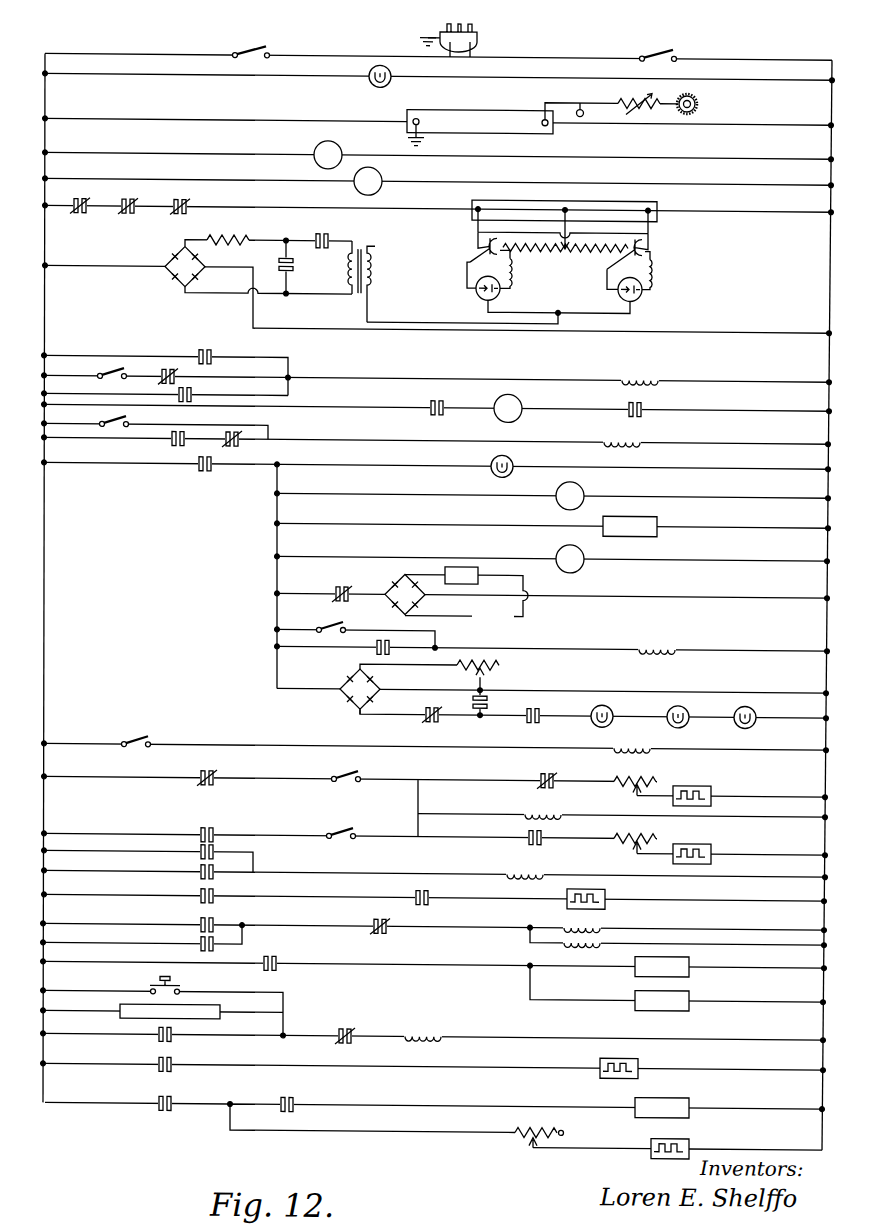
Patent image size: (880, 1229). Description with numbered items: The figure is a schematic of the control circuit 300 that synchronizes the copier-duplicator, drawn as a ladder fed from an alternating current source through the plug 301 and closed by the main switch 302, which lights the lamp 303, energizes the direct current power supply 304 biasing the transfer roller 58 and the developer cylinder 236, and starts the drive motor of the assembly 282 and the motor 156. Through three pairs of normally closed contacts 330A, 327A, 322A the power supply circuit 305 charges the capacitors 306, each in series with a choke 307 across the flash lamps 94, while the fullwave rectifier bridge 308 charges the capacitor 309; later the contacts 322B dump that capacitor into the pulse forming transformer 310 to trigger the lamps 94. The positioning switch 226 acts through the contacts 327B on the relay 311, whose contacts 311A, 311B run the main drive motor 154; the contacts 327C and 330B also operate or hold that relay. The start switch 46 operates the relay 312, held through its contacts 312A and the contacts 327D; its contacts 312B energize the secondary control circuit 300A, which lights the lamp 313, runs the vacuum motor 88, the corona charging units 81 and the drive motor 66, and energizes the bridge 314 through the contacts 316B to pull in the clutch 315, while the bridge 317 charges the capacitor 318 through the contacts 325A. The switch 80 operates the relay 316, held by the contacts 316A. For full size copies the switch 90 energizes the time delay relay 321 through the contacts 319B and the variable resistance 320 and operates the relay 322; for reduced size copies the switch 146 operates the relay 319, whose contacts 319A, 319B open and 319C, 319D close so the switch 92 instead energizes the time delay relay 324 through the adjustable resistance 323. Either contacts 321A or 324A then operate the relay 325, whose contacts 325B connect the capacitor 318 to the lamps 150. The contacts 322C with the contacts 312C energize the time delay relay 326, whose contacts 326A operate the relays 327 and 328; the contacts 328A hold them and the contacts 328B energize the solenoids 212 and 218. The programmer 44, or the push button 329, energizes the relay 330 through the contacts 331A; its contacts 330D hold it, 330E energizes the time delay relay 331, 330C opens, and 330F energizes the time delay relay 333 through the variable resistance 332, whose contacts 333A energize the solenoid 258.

The control circuit 300 is at (81, 39).
The secondary control circuit 300A is at (238, 584).
The plug 301 is at (479, 34).
The main switch 302 is at (234, 47).
The lamp 303 is at (372, 81).
The direct current power supply 304 is at (542, 125).
The cylinder 236 is at (698, 93).
The transfer roller 58 is at (586, 114).
The assembly 282 is at (316, 143).
The motor 156 is at (382, 170).
The normally closed contacts 330A is at (82, 213).
The normally closed contacts 327A is at (142, 213).
The normally closed contacts 322A is at (188, 199).
The normally open contacts 322B is at (330, 222).
The pulse forming transformer 310 is at (374, 240).
The capacitor 309 is at (296, 262).
The fullwave rectifier bridge 308 is at (164, 280).
The power supply circuit 305 is at (656, 200).
The capacitors 306 is at (476, 235).
The choke 307 is at (515, 262).
The lamps 94 is at (476, 284).
The switch 226 is at (104, 365).
The normally closed contacts 327B is at (168, 366).
The normally open contacts 330B is at (207, 346).
The normally open contacts 327C is at (194, 384).
The relay 311 is at (647, 370).
The normally open contacts 311A is at (432, 408).
The main drive motor 154 is at (522, 401).
The normally open contacts 311B is at (640, 410).
The start switch 46 is at (102, 414).
The normally open contacts 312A is at (172, 440).
The normally closed contacts 327D is at (235, 440).
The relay 312 is at (612, 435).
The lamp 313 is at (492, 458).
The normally open contacts 312B is at (204, 470).
The vacuum motor 88 is at (580, 488).
The corona charging units 81 is at (655, 518).
The clutch 315 is at (463, 562).
The normally closed contacts 316B is at (338, 587).
The fullwave rectifier bridge 314 is at (393, 579).
The drive motor 66 is at (580, 564).
The switch 80 is at (320, 618).
The relay 316 is at (662, 640).
The normally open contacts 316A is at (374, 648).
The fullwave rectifier bridge 317 is at (340, 697).
The capacitor 318 is at (488, 694).
The normally closed contacts 325A is at (434, 717).
The normally open contacts 325B is at (534, 719).
The lamps 150 is at (596, 721).
The switch 146 is at (124, 736).
The relay 319 is at (648, 746).
The switch 90 is at (330, 769).
The normally closed contacts 319A is at (210, 780).
The normally closed contacts 319B is at (544, 768).
The variable resistance element 320 is at (614, 784).
The time delay relay 321 is at (708, 781).
The relay 322 is at (530, 806).
The normally open contacts 319C is at (210, 826).
The switch 92 is at (328, 824).
The normally open contacts 319D is at (530, 836).
The adjustable resistance element 323 is at (651, 833).
The time delay relay 324 is at (710, 841).
The contacts 321A is at (215, 844).
The relay 325 is at (535, 865).
The contacts 324A is at (200, 872).
The normally open contacts 322C is at (215, 890).
The normally open contacts 312C is at (426, 892).
The time delay relay 326 is at (606, 893).
The normally open contacts 326A is at (200, 916).
The normally closed contacts 330C is at (380, 916).
The relay 327 is at (600, 922).
The normally open contacts 328A is at (200, 941).
The relay 328 is at (570, 941).
The normally open contacts 328B is at (278, 954).
The solenoid 212 is at (689, 968).
The push button 329 is at (178, 982).
The solenoid 218 is at (689, 1003).
The programmer unit 44 is at (120, 1010).
The normally closed contacts 331A is at (345, 1023).
The relay 330 is at (424, 1024).
The normally open contacts 330D is at (170, 1035).
The normally open contacts 330E is at (170, 1065).
The time delay relay 331 is at (638, 1057).
The normally open contacts 333A is at (286, 1095).
The normally open contacts 330F is at (166, 1108).
The solenoid 258 is at (687, 1097).
The variable resistance element 332 is at (516, 1140).
The time delay relay 333 is at (684, 1141).